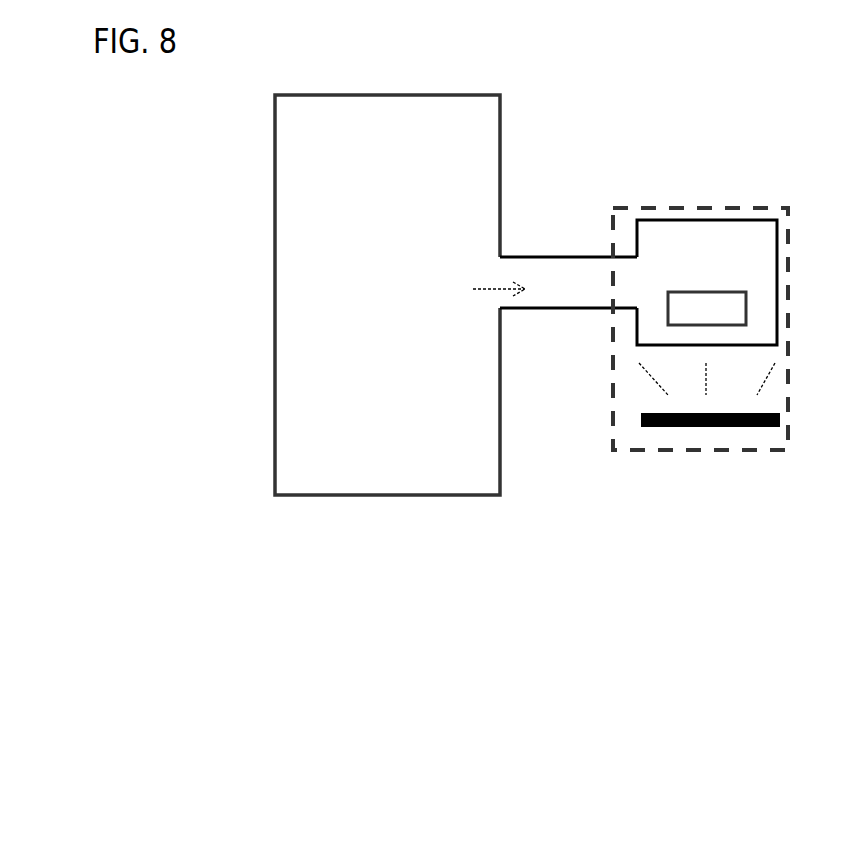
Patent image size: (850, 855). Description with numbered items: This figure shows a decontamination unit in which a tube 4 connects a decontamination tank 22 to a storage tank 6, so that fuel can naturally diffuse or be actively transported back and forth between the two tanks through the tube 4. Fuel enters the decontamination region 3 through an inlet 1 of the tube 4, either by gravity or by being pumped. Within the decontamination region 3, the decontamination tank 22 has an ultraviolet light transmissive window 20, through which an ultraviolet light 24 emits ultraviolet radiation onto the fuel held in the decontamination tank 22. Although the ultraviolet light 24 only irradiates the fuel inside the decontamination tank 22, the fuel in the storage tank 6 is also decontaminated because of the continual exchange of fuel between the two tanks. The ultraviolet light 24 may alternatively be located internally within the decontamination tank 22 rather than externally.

The inlet 1 is at (477, 290).
The decontamination region 3 is at (719, 207).
The tube 4 is at (555, 310).
The storage tank 6 is at (355, 496).
The ultraviolet light transmissive window 20 is at (723, 307).
The decontamination tank 22 is at (668, 257).
The ultraviolet light 24 is at (750, 427).